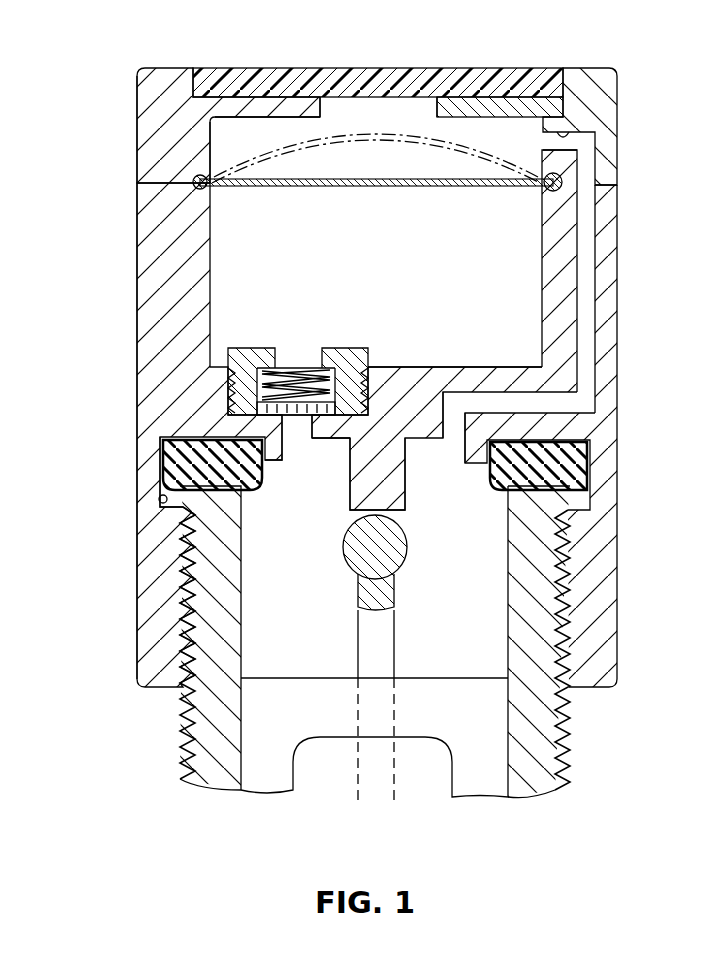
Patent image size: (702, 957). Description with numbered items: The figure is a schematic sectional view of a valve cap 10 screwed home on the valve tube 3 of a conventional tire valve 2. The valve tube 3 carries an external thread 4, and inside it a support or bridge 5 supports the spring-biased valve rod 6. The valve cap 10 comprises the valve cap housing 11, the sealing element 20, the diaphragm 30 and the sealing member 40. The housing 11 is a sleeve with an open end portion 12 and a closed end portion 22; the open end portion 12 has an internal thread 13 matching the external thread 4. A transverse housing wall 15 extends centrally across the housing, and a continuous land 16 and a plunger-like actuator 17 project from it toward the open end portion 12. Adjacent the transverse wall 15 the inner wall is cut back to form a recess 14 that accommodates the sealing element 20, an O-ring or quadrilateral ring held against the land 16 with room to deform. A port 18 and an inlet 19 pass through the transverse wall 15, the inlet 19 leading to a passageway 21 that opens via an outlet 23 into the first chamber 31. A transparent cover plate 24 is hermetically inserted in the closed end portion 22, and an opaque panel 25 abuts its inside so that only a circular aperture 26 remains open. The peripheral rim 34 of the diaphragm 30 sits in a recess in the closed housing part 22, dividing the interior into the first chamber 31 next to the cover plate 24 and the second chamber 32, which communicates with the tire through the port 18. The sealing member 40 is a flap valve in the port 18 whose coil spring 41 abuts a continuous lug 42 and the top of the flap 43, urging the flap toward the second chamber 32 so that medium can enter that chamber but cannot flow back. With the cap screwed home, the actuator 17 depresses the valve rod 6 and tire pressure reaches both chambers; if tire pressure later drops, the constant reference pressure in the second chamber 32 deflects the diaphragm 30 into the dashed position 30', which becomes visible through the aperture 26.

The tire valve 2 is at (287, 805).
The valve tube 3 is at (515, 780).
The external thread 4 is at (567, 728).
The support or bridge 5 is at (440, 693).
The valve rod 6 is at (385, 590).
The valve cap 10 is at (116, 357).
The valve cap housing 11 is at (605, 350).
The open end portion 12 is at (602, 595).
The internal thread 13 is at (565, 643).
The recess 14 is at (160, 502).
The transverse housing wall 15 is at (480, 378).
The continuous land 16 is at (285, 462).
The plunger-like actuator 17 is at (400, 488).
The port 18 is at (310, 428).
The inlet 19 is at (447, 428).
The sealing element 20 is at (192, 468).
The passageway 21 is at (588, 280).
The closed end portion 22 is at (603, 123).
The outlet 23 is at (573, 128).
The transparent cover plate 24 is at (515, 85).
The opaque panel 25 is at (453, 110).
The circular aperture 26 is at (322, 107).
The diaphragm 30 is at (381, 204).
The deflected diaphragm 30' is at (376, 158).
The first chamber 31 is at (230, 128).
The second chamber 32 is at (235, 253).
The peripheral rim 34 is at (193, 180).
The sealing member 40 is at (316, 340).
The coil spring 41 is at (290, 378).
The continuous lug 42 is at (335, 356).
The flap 43 is at (277, 410).